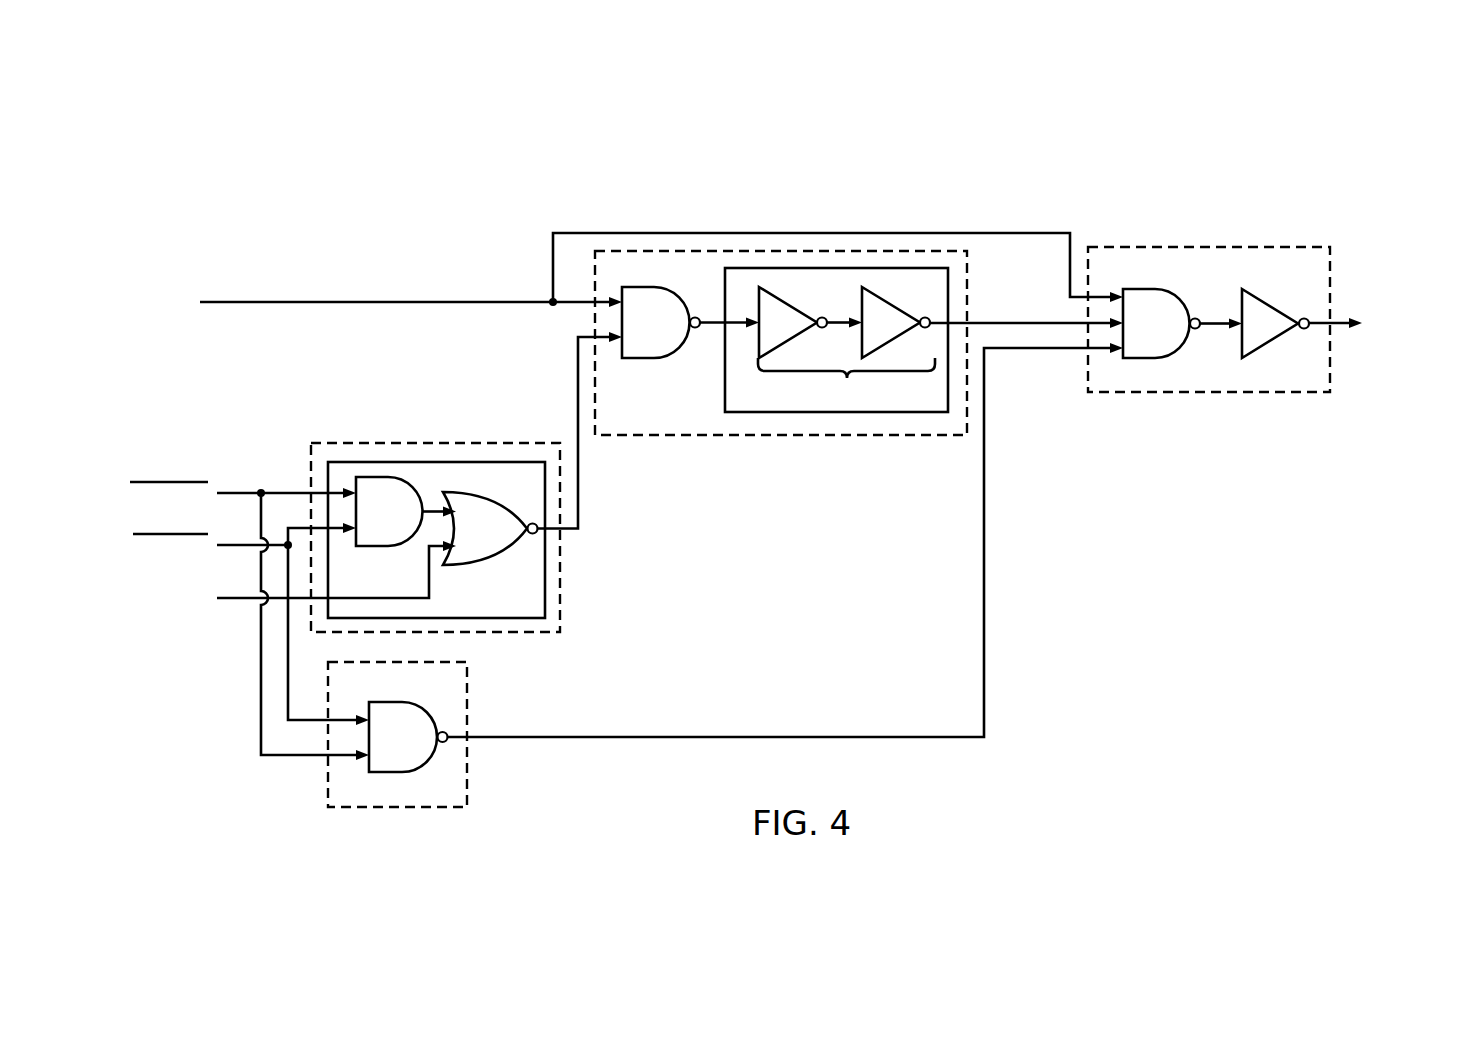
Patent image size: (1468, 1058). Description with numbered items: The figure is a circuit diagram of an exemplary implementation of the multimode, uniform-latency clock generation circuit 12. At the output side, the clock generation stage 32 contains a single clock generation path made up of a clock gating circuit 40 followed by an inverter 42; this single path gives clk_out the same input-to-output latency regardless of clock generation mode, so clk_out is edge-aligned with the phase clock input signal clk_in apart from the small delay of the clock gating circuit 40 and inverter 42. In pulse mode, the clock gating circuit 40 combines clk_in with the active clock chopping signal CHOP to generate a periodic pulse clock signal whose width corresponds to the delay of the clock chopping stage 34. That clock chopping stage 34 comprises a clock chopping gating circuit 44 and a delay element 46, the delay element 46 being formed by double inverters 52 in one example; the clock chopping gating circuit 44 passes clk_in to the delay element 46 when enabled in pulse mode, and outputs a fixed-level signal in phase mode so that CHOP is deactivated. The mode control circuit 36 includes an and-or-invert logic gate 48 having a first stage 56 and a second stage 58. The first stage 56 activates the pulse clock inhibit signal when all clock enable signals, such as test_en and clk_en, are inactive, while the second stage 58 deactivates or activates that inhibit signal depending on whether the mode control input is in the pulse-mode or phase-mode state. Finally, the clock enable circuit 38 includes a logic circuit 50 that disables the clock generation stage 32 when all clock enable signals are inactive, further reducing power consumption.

The multimode, uniform-latency clock generation circuit 12 is at (1240, 163).
The clock generation stage 32 is at (1232, 393).
The clock chopping stage 34 is at (870, 436).
The mode control circuit 36 is at (508, 633).
The clock enable circuit 38 is at (403, 808).
The clock gating circuit 40 is at (1155, 289).
The inverter 42 is at (1258, 292).
The clock chopping gating circuit 44 is at (653, 287).
The delay element 46 is at (725, 390).
The and-or-invert (AOI) logic gate 48 is at (547, 583).
The logic circuit 50 is at (394, 702).
The double inverters 52 is at (846, 348).
The first stage 56 is at (376, 548).
The second stage 58 is at (483, 566).